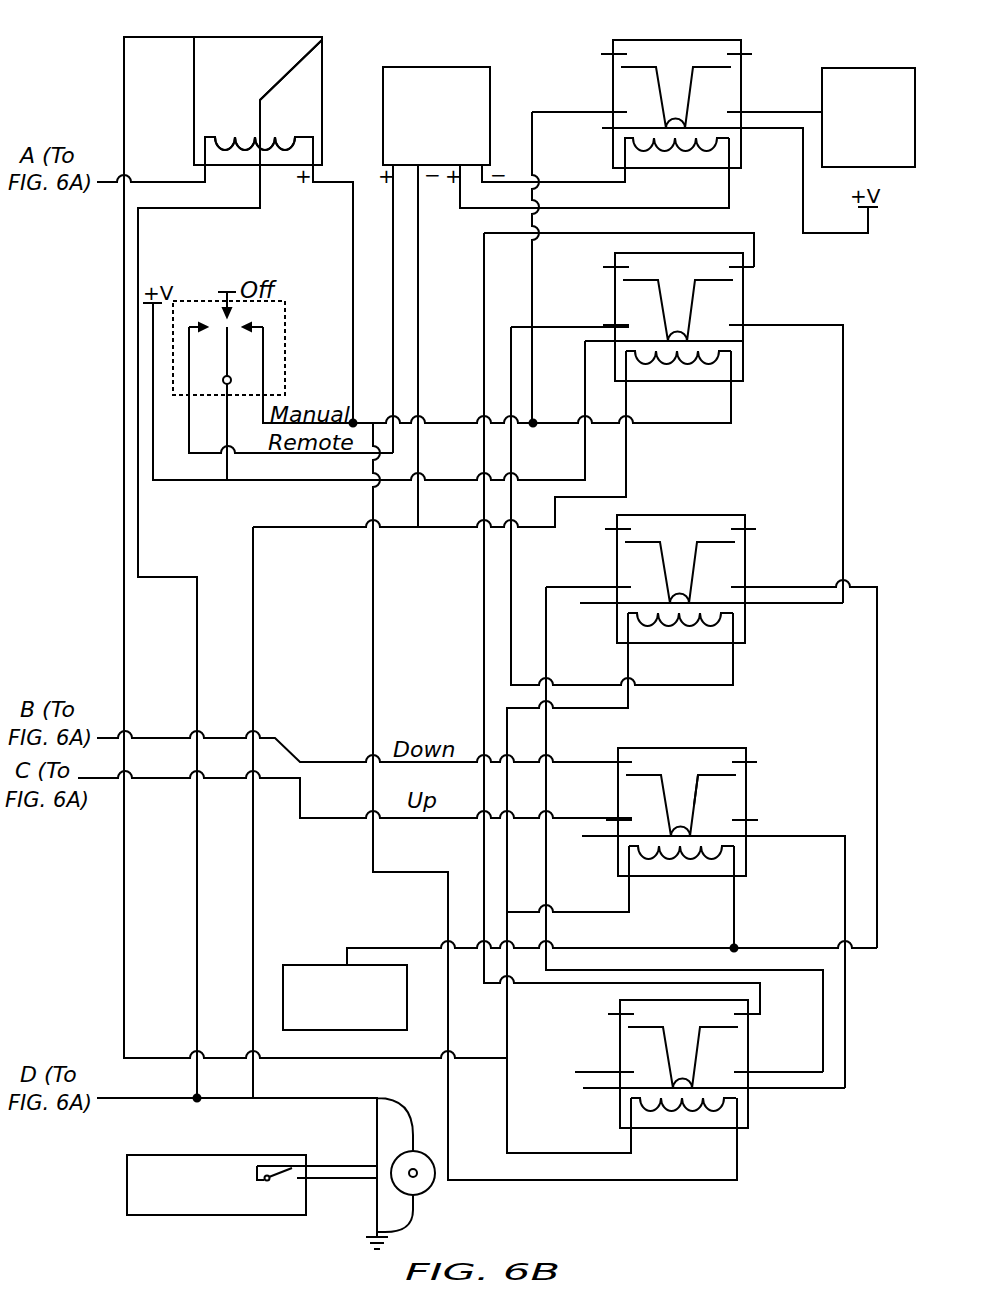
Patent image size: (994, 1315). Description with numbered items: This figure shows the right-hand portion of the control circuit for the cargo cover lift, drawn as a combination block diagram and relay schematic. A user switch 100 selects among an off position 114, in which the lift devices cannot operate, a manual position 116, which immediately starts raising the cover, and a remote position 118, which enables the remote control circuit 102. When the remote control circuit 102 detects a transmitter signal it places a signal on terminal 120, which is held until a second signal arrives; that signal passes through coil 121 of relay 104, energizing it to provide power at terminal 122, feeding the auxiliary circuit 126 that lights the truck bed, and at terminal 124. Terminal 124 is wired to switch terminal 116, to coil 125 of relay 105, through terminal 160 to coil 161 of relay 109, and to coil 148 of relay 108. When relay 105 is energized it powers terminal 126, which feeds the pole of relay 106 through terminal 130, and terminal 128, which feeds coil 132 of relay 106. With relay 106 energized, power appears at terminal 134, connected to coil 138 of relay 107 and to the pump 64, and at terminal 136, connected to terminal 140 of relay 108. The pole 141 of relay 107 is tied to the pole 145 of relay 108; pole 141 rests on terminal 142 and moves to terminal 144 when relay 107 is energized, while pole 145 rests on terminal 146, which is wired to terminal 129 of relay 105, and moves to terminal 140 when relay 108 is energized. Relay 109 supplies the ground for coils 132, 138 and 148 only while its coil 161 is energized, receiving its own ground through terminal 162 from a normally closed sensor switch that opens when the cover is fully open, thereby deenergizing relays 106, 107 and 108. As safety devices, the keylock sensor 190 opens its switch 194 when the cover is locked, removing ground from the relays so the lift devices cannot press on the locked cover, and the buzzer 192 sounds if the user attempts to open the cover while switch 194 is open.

The relay 109 is at (268, 37).
The coil 161 is at (251, 137).
The terminal 162 is at (203, 173).
The terminal 160 is at (314, 173).
The remote control circuit 102 is at (416, 67).
The terminal 120 is at (462, 208).
The relay 104 is at (676, 40).
The coil 121 is at (693, 160).
The terminal 124 is at (583, 112).
The terminal 122 is at (752, 112).
The auxiliary circuit 126 is at (848, 68).
The relay 105 is at (745, 308).
The terminal 129 is at (752, 268).
The terminal 128 is at (546, 327).
The coil 125 is at (694, 370).
The switch 100 is at (286, 316).
The off position 114 is at (226, 290).
The manual position 116 is at (264, 368).
The remote position 118 is at (190, 430).
The relay 106 is at (693, 515).
The terminal 136 is at (547, 587).
The terminal 134 is at (762, 587).
The terminal 130 is at (757, 606).
The coil 132 is at (695, 630).
The relay 107 is at (697, 748).
The terminal 142 is at (554, 762).
The terminal 144 is at (558, 820).
The pole 141 is at (698, 800).
The coil 138 is at (698, 863).
The pump 64 is at (295, 965).
The relay 108 is at (616, 1010).
The pole 145 is at (665, 1036).
The terminal 146 is at (756, 1018).
The terminal 140 is at (757, 1072).
The coil 148 is at (699, 1117).
The keylock sensor 190 is at (220, 1155).
The switch 194 is at (294, 1181).
The buzzer 192 is at (430, 1193).